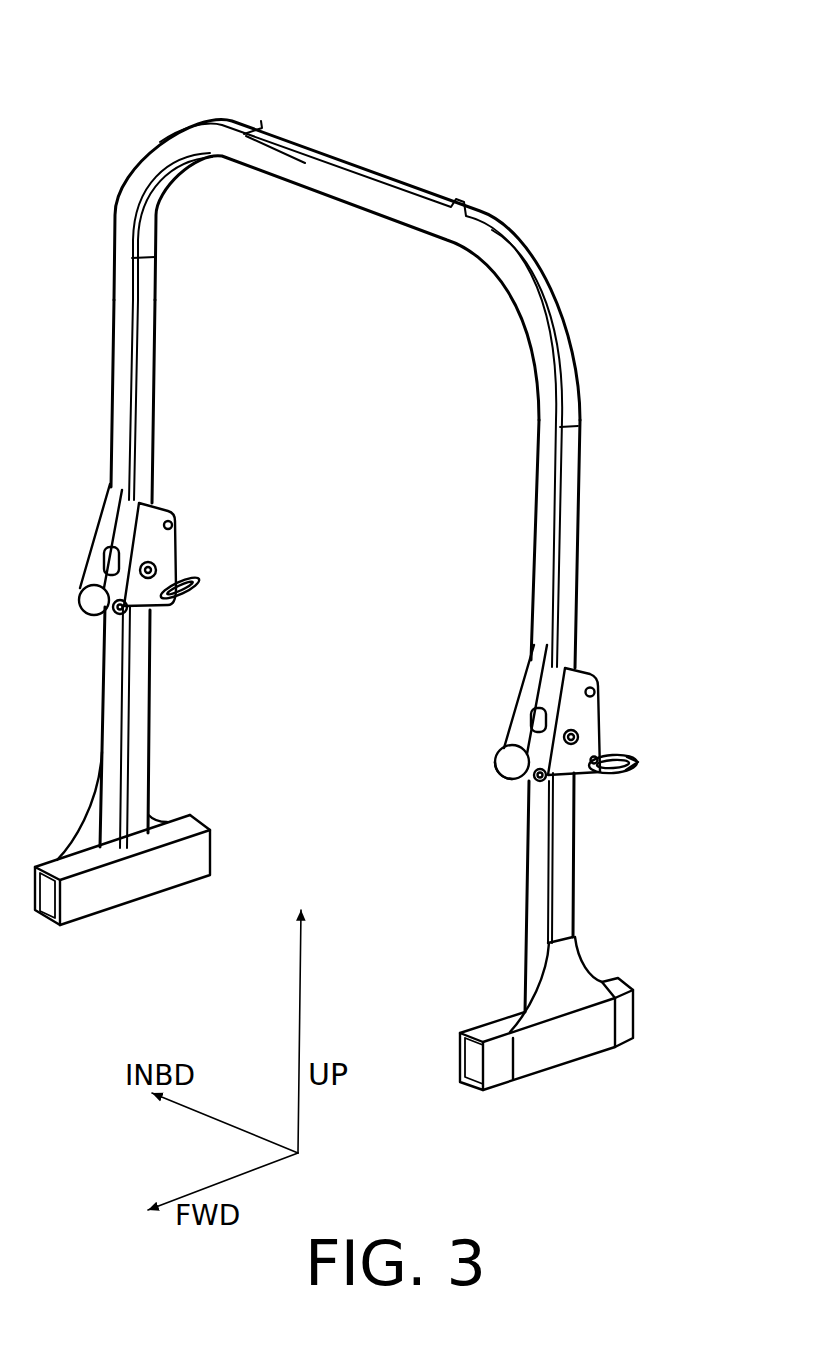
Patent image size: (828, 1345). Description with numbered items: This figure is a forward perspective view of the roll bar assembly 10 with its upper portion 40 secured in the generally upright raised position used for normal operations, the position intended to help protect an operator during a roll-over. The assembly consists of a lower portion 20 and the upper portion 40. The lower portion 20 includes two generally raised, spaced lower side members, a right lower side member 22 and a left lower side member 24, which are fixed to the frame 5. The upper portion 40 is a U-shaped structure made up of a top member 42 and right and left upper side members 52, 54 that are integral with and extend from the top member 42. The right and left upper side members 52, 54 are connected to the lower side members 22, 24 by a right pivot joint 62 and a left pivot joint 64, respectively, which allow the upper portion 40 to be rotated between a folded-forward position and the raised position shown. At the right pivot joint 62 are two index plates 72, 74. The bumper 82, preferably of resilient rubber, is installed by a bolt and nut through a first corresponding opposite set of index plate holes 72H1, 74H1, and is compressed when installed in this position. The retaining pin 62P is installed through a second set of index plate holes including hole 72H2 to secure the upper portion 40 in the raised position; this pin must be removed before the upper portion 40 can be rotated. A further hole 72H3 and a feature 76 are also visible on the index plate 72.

The roll bar assembly 10 is at (352, 78).
The upper portion 40 is at (572, 287).
The top member 42 is at (340, 152).
The left upper side member 54 is at (153, 387).
The right upper side member 52 is at (567, 545).
The lower portion 20 is at (462, 888).
The left lower side member 24 is at (140, 687).
The right lower side member 22 is at (575, 846).
The frame 5 is at (500, 1093).
The left pivot joint 64 is at (193, 524).
The right pivot joint 62 is at (601, 636).
The index plate 74 is at (527, 708).
The first index plate hole 74H1 is at (503, 753).
The bumper 82 is at (507, 778).
The index plate 72 is at (586, 710).
The plate hole 72H3 is at (598, 686).
The first index plate hole 72H1 is at (538, 790).
The second index plate hole 72H2 is at (594, 757).
The fastener hole 76 is at (580, 737).
The retaining pin 62P is at (606, 778).